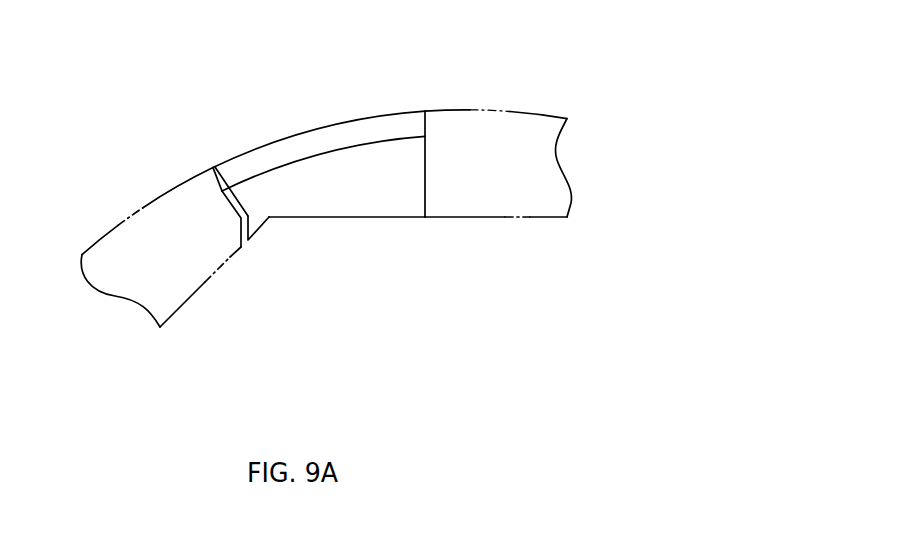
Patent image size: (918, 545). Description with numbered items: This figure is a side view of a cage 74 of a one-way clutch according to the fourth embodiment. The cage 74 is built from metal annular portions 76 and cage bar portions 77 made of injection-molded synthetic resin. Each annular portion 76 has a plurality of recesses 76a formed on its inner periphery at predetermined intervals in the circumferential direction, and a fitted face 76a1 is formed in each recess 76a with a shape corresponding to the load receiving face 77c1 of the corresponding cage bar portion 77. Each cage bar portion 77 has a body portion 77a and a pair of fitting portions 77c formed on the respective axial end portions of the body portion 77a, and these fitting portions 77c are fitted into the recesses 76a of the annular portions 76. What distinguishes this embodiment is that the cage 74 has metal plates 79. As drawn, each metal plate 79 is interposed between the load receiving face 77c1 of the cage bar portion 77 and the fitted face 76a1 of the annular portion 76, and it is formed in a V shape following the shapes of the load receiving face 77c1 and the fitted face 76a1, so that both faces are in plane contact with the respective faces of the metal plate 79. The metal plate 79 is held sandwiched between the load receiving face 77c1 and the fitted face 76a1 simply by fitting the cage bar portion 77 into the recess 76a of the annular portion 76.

The cage 74 is at (478, 85).
The annular portion 76 is at (525, 111).
The recess 76a is at (425, 168).
The fitted face 76a1 is at (235, 204).
The cage bar portion 77 is at (283, 142).
The body portion 77a is at (343, 121).
The fitting portion 77c is at (335, 210).
The load receiving face 77c1 is at (237, 225).
The metal plate 79 is at (221, 192).